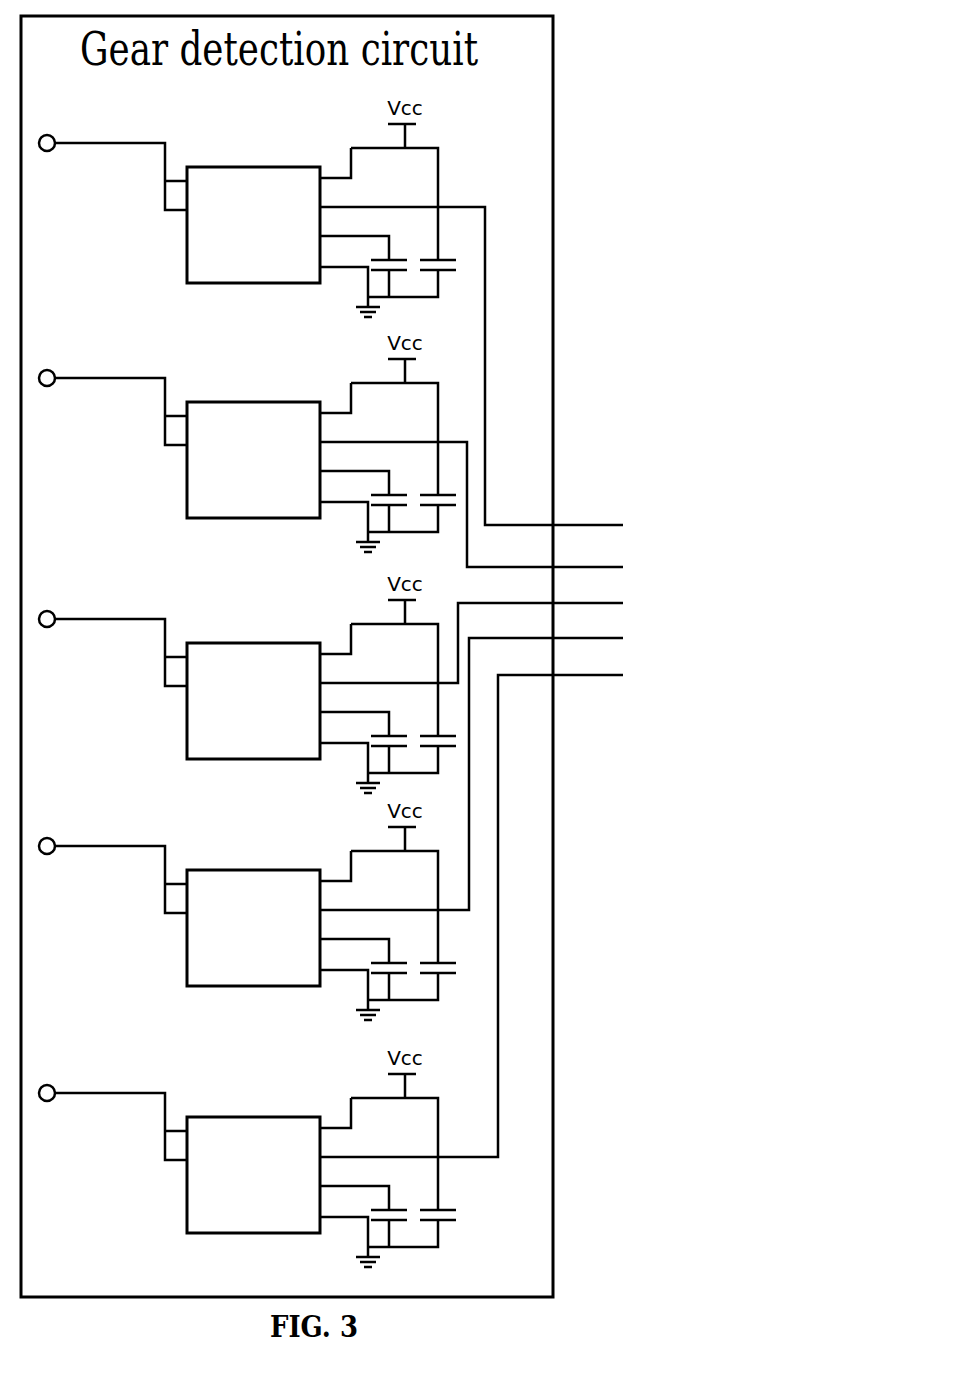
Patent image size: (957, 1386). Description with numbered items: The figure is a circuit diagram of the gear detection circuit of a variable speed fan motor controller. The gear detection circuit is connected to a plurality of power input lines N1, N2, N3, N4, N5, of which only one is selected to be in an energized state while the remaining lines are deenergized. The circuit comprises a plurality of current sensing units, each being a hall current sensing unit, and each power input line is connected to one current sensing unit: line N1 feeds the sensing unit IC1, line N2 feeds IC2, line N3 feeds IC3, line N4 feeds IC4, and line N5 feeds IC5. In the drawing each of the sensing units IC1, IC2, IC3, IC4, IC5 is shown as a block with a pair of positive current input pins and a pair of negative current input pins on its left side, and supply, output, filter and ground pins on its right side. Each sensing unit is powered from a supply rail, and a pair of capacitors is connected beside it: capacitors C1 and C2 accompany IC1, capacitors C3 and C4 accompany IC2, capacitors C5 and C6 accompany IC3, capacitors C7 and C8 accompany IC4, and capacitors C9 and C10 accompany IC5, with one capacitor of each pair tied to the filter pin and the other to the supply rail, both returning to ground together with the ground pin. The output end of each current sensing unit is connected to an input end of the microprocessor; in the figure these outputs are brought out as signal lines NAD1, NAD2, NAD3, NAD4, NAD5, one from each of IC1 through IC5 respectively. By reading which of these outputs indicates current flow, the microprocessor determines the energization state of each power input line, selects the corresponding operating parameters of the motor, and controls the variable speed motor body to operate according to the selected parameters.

The current sensor IC1 is at (253, 247).
The current sensor IC2 is at (253, 482).
The current sensor IC3 is at (253, 723).
The current sensor IC4 is at (253, 950).
The current sensor IC5 is at (253, 1197).
The filter capacitor C1 is at (397, 246).
The decoupling capacitor C2 is at (444, 246).
The filter capacitor C3 is at (397, 481).
The decoupling capacitor C4 is at (444, 481).
The filter capacitor C5 is at (397, 722).
The decoupling capacitor C6 is at (444, 722).
The filter capacitor C7 is at (397, 949).
The decoupling capacitor C8 is at (444, 949).
The filter capacitor C9 is at (397, 1196).
The decoupling capacitor C10 is at (450, 1196).
The power input line N1 is at (113, 172).
The power input line N2 is at (113, 407).
The power input line N3 is at (112, 648).
The power input line N4 is at (112, 875).
The power input line N5 is at (111, 1122).
The output signal NAD1- NAD1 is at (592, 506).
The output signal NAD2- NAD2 is at (592, 549).
The output signal NAD3- NAD3 is at (592, 588).
The output signal NAD4- NAD4 is at (592, 623).
The output signal NAD5- NAD5 is at (592, 662).